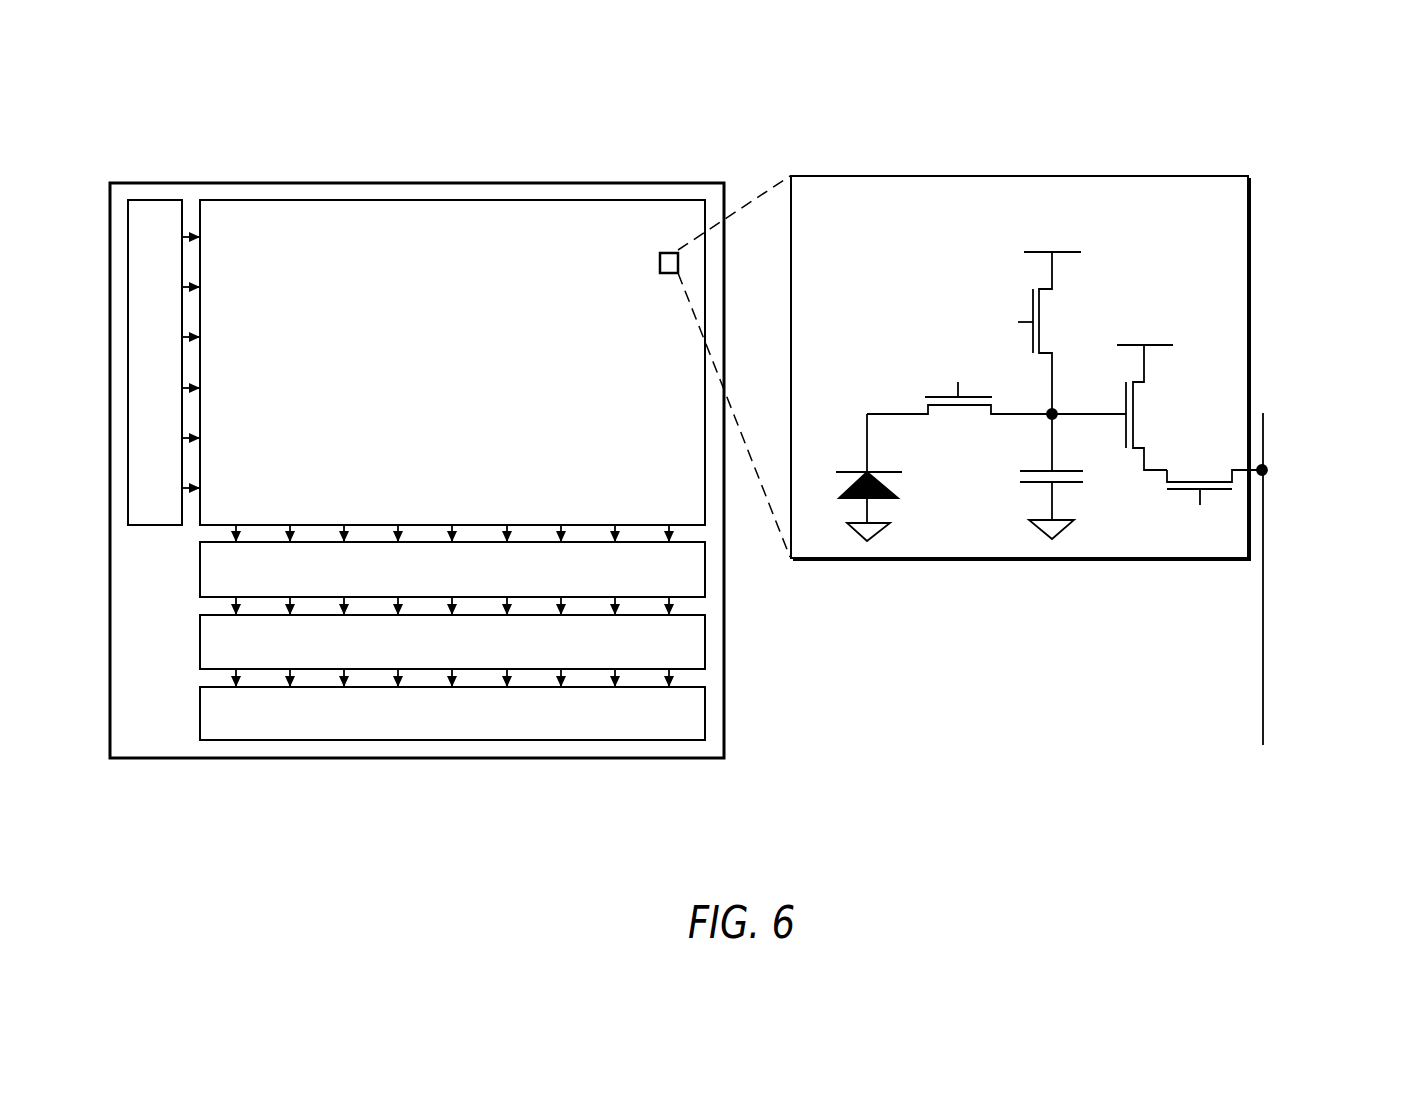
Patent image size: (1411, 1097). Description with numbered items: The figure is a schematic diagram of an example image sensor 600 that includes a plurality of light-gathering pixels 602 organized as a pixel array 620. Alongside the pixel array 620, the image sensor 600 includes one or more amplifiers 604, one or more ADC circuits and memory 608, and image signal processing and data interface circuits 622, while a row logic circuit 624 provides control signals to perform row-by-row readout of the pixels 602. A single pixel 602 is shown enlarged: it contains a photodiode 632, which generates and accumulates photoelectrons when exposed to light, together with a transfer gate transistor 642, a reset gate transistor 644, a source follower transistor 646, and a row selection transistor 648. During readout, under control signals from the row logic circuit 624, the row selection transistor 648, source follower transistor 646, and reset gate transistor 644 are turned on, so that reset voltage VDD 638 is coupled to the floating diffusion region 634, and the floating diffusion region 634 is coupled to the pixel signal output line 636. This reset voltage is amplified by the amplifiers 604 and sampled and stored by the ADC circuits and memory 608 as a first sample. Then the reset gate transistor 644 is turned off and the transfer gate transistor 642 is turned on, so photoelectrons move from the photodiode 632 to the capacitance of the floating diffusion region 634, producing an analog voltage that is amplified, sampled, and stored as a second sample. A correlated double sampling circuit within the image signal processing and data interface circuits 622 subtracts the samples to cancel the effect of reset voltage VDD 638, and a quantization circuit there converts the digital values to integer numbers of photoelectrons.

The image sensor 600 is at (233, 106).
The pixel 602 is at (955, 368).
The amplifiers 604 is at (452, 578).
The ADC circuits and memory 608 is at (452, 651).
The pixel array 620 is at (452, 371).
The image signal processing and data interface circuits 622 is at (452, 713).
The row logic circuit 624 is at (164, 362).
The photodiode 632 is at (852, 477).
The floating diffusion region 634 is at (1054, 474).
The pixel signal output line 636 is at (1330, 579).
The reset voltage VDD 638 is at (1100, 284).
The transfer gate transistor 642 is at (959, 385).
The reset gate transistor 644 is at (998, 333).
The source follower transistor 646 is at (1163, 407).
The row selection transistor 648 is at (1212, 502).